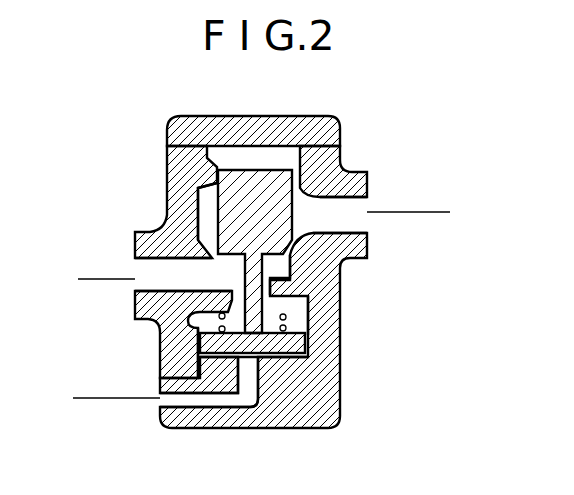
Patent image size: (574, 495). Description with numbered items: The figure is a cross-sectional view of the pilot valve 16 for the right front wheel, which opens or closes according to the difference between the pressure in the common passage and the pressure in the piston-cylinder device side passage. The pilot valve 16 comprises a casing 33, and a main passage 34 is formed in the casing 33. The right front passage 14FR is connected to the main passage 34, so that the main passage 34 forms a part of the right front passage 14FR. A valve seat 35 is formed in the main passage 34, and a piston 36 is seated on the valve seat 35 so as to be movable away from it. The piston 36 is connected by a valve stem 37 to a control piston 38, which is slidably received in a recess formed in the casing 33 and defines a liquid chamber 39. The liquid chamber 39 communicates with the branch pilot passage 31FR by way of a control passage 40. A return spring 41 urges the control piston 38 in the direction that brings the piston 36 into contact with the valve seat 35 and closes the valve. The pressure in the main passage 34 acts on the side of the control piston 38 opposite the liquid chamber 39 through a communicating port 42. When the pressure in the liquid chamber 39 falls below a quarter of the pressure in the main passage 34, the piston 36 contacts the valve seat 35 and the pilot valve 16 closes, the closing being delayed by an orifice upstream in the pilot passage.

The pilot valve 16 is at (278, 107).
The casing 33 is at (343, 311).
The main passage 34 is at (347, 223).
The valve seat 35 is at (195, 247).
The piston 36 is at (230, 177).
The valve stem 37 is at (262, 277).
The control piston 38 is at (305, 347).
The liquid chamber 39 is at (287, 355).
The control passage 40 is at (262, 402).
The return spring 41 is at (215, 318).
The communicating port 42 is at (310, 325).
The right front passage 14FR is at (420, 211).
The branch pilot passage 31FR is at (118, 400).